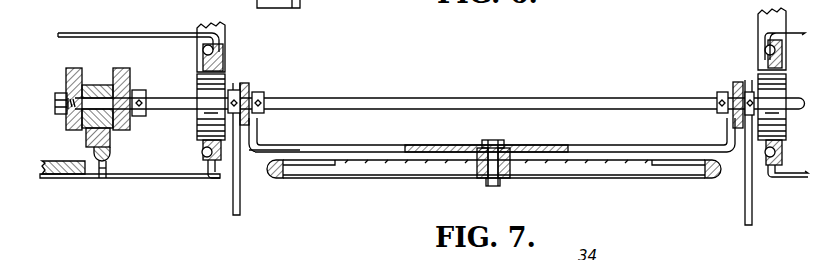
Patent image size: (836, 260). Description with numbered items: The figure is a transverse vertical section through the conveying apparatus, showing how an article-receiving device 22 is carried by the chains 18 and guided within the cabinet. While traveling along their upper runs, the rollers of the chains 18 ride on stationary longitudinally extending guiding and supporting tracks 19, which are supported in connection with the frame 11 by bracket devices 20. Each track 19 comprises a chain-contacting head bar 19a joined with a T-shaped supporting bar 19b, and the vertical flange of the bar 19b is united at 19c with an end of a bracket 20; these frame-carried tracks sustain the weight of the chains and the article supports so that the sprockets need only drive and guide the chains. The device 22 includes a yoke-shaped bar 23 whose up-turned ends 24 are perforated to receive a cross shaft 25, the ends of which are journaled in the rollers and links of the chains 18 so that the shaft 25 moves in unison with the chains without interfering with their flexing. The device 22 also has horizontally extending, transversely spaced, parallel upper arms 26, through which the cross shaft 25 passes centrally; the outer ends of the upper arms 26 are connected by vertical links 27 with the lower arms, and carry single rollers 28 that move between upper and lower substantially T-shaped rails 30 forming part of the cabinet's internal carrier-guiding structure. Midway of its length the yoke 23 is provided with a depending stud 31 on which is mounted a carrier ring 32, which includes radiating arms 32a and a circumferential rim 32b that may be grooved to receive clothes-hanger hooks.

The frame 11 is at (56, 178).
The chains 18 is at (125, 68).
The guiding and supporting track 19 is at (131, 151).
The chain-contacting bar 19a is at (85, 140).
The T-shaped supporting bar 19b is at (104, 182).
The union of flange and bracket 19c is at (108, 160).
The bracket device 20 is at (92, 178).
The article-receiving device 22 is at (290, 198).
The yoke-shaped bar 23 is at (430, 146).
The up-turned ends 24 is at (251, 88).
The cross shaft 25 is at (366, 97).
The upper arms 26 is at (250, 121).
The vertical links 27 is at (241, 212).
The single rollers 28 is at (205, 87).
The T-shaped rails 30 is at (222, 46).
The depending stud 31 is at (497, 183).
The carrier ring 32 is at (623, 186).
The radiating arms 32a is at (400, 168).
The circumferential rim 32b is at (708, 172).